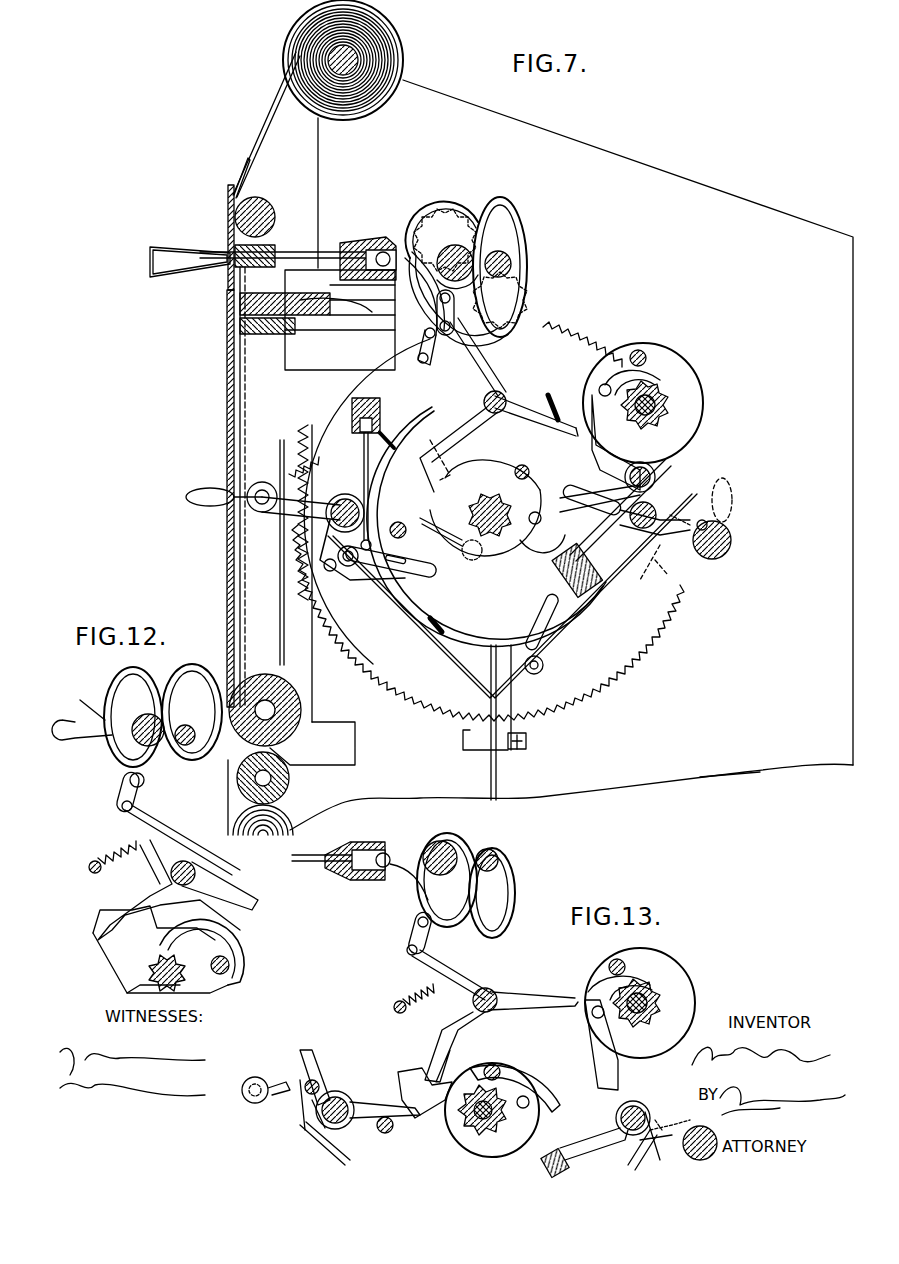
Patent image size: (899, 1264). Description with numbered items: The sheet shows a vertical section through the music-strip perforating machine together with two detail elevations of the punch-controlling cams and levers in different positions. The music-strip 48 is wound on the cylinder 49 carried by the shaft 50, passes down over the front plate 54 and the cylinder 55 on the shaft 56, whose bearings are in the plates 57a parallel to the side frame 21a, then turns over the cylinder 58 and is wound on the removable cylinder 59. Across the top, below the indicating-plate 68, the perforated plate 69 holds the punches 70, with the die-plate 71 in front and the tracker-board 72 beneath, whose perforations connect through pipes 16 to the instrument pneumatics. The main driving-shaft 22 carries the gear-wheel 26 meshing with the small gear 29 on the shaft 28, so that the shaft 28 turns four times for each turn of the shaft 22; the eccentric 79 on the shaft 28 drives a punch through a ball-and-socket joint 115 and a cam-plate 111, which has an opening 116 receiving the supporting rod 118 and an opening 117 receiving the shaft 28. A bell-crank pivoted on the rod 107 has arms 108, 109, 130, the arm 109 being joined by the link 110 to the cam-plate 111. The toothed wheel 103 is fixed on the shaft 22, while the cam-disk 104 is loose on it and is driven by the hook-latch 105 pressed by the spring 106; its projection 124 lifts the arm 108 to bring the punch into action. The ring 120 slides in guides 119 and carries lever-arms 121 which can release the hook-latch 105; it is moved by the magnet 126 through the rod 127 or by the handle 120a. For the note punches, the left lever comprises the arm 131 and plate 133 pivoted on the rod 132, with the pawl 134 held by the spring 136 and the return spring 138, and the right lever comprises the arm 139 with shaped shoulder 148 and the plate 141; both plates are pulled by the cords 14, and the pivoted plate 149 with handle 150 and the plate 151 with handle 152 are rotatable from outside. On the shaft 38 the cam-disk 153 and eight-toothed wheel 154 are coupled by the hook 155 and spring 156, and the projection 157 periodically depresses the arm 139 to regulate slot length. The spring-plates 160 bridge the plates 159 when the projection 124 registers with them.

In FIG. 7, the cylinder 49 is at (292, 34).
In FIG. 7, the shaft 50 is at (358, 60).
In FIG. 7, the music-strip 48 is at (270, 113).
In FIG. 7, the indicating-plate 68 is at (228, 205).
In FIG. 7, the perforated plate 69 is at (270, 248).
In FIG. 7, the punches 70 is at (305, 256).
In FIG. 13, the punches 70 is at (305, 862).
In FIG. 7, the die-plate 71 is at (222, 262).
In FIG. 7, the tracker-board 72 is at (240, 325).
In FIG. 7, the eccentric 79 is at (410, 238).
In FIG. 12, the eccentric 79 is at (140, 770).
In FIG. 13, the eccentric 79 is at (430, 848).
In FIG. 7, the small gear 29 is at (430, 205).
In FIG. 7, the shaft 28 is at (480, 250).
In FIG. 12, the shaft 28 is at (163, 715).
In FIG. 13, the shaft 28 is at (470, 852).
In FIG. 7, the rod 118 is at (512, 268).
In FIG. 12, the rod 118 is at (185, 745).
In FIG. 13, the rod 118 is at (500, 860).
In FIG. 7, the opening 116 is at (512, 302).
In FIG. 12, the opening 116 is at (195, 719).
In FIG. 13, the opening 116 is at (492, 905).
In FIG. 7, the ball-and-socket joint 115 is at (395, 288).
In FIG. 12, the ball-and-socket joint 115 is at (72, 740).
In FIG. 13, the ball-and-socket joint 115 is at (375, 880).
In FIG. 7, the pipes 16 is at (330, 300).
In FIG. 7, the front plate 54 is at (227, 398).
In FIG. 7, the plates 57a is at (244, 598).
In FIG. 7, the cam-plate 111 is at (421, 293).
In FIG. 12, the cam-plate 111 is at (82, 699).
In FIG. 13, the cam-plate 111 is at (403, 883).
In FIG. 7, the link 110 is at (420, 342).
In FIG. 12, the link 110 is at (122, 808).
In FIG. 13, the link 110 is at (408, 938).
In FIG. 7, the arm 109 is at (476, 378).
In FIG. 12, the arm 109 is at (178, 858).
In FIG. 13, the arm 109 is at (455, 975).
In FIG. 7, the guides 119 is at (400, 640).
In FIG. 7, the spring 156 is at (595, 388).
In FIG. 7, the gear-wheel 26 is at (405, 700).
In FIG. 7, the cords 14 is at (440, 648).
In FIG. 13, the cords 14 is at (336, 1150).
In FIG. 7, the ring 120 is at (466, 665).
In FIG. 7, the handle 120a is at (527, 745).
In FIG. 7, the lever-arms 121 is at (540, 612).
In FIG. 7, the arm 130 is at (560, 432).
In FIG. 12, the arm 130 is at (255, 892).
In FIG. 13, the arm 130 is at (548, 990).
In FIG. 7, the rod 107 is at (495, 402).
In FIG. 12, the rod 107 is at (200, 872).
In FIG. 13, the rod 107 is at (472, 1002).
In FIG. 7, the arm 108 is at (432, 470).
In FIG. 12, the arm 108 is at (115, 898).
In FIG. 13, the arm 108 is at (455, 1043).
In FIG. 7, the projection 124 is at (438, 455).
In FIG. 12, the projection 124 is at (140, 928).
In FIG. 13, the projection 124 is at (425, 1072).
In FIG. 7, the hook-latch 105 is at (475, 490).
In FIG. 12, the hook-latch 105 is at (205, 950).
In FIG. 13, the hook-latch 105 is at (495, 1062).
In FIG. 7, the main driving-shaft 22 is at (493, 537).
In FIG. 12, the main driving-shaft 22 is at (158, 972).
In FIG. 13, the main driving-shaft 22 is at (468, 1130).
In FIG. 7, the cam-disk 104 is at (466, 525).
In FIG. 12, the cam-disk 104 is at (128, 982).
In FIG. 13, the cam-disk 104 is at (495, 1142).
In FIG. 7, the spring 106 is at (535, 560).
In FIG. 13, the spring 106 is at (528, 1095).
In FIG. 7, the arm 131 is at (398, 522).
In FIG. 13, the arm 131 is at (395, 1135).
In FIG. 7, the plate 133 is at (336, 568).
In FIG. 13, the plate 133 is at (310, 1128).
In FIG. 7, the pawl 134 is at (290, 515).
In FIG. 13, the pawl 134 is at (304, 1040).
In FIG. 7, the pivoted plate 149 is at (262, 482).
In FIG. 13, the pivoted plate 149 is at (268, 1078).
In FIG. 7, the handle 150 is at (186, 496).
In FIG. 7, the magnet 126 is at (352, 425).
In FIG. 7, the rod 127 is at (362, 468).
In FIG. 7, the cam-disk 153 is at (690, 362).
In FIG. 13, the cam-disk 153 is at (680, 995).
In FIG. 7, the shaft 38 is at (662, 405).
In FIG. 13, the shaft 38 is at (615, 995).
In FIG. 7, the toothed wheel 154 is at (668, 390).
In FIG. 13, the toothed wheel 154 is at (660, 980).
In FIG. 7, the hook 155 is at (640, 348).
In FIG. 13, the hook 155 is at (640, 965).
In FIG. 7, the projection 157 is at (615, 442).
In FIG. 13, the projection 157 is at (610, 1068).
In FIG. 7, the shaped shoulder 148 is at (654, 484).
In FIG. 13, the shaped shoulder 148 is at (615, 1110).
In FIG. 7, the arm 139 is at (600, 493).
In FIG. 13, the arm 139 is at (595, 1140).
In FIG. 7, the plate 141 is at (690, 570).
In FIG. 13, the plate 141 is at (659, 1146).
In FIG. 7, the spring-plates 160 is at (586, 565).
In FIG. 13, the spring-plates 160 is at (542, 1164).
In FIG. 7, the plates 159 is at (612, 600).
In FIG. 7, the plate 151 is at (728, 560).
In FIG. 13, the plate 151 is at (695, 1160).
In FIG. 7, the handle 152 is at (730, 478).
In FIG. 7, the cylinder 55 is at (290, 700).
In FIG. 7, the shaft 56 is at (270, 712).
In FIG. 7, the cylinder 58 is at (290, 780).
In FIG. 7, the cylinder 59 is at (240, 825).
In FIG. 7, the side frame 21a is at (748, 772).
In FIG. 12, the opening 117 is at (143, 719).
In FIG. 13, the opening 117 is at (448, 893).
In FIG. 12, the toothed wheel 103 is at (215, 990).
In FIG. 13, the toothed wheel 103 is at (452, 1110).
In FIG. 13, the spring 136 is at (316, 1078).
In FIG. 13, the rod 132 is at (345, 1104).
In FIG. 13, the spring 138 is at (355, 1120).